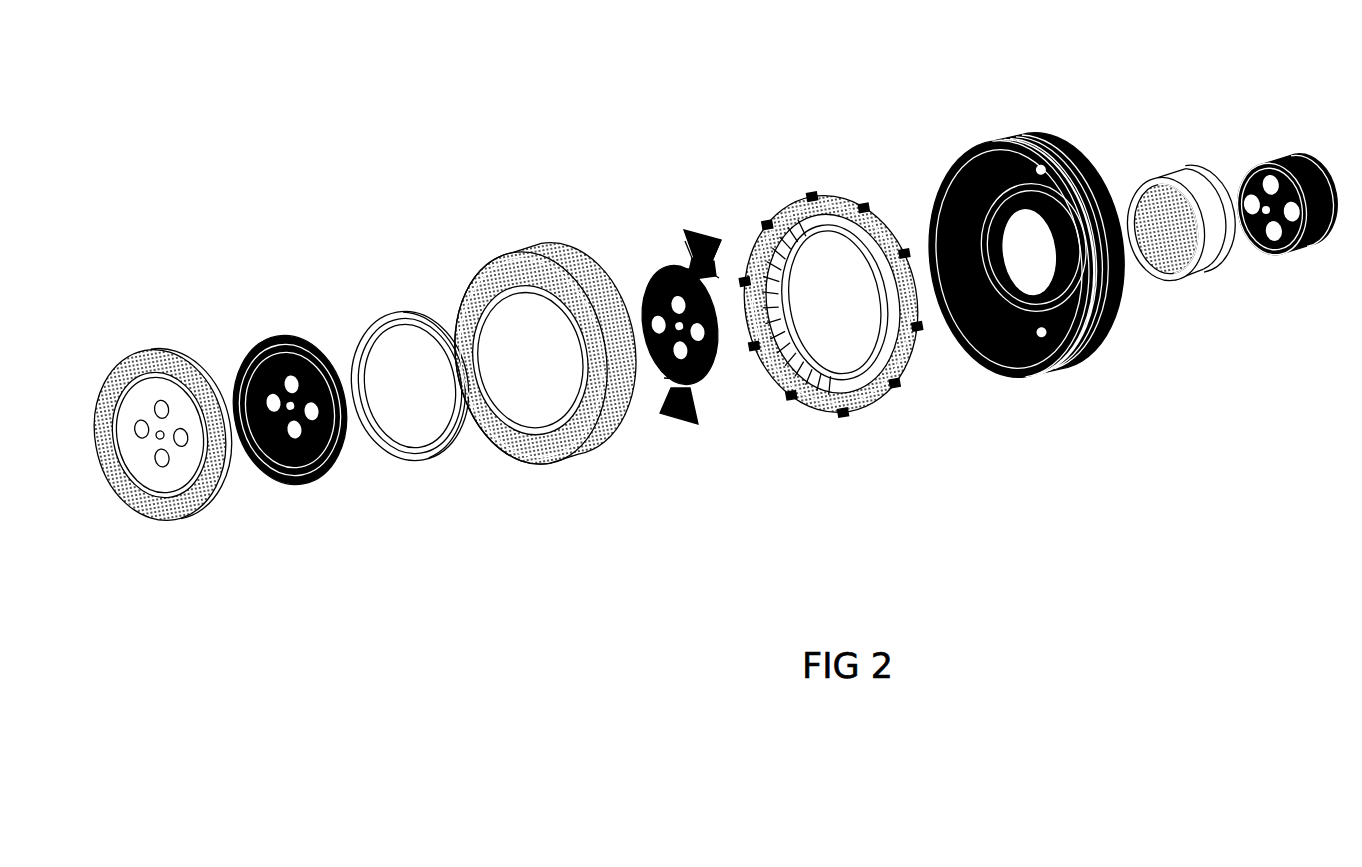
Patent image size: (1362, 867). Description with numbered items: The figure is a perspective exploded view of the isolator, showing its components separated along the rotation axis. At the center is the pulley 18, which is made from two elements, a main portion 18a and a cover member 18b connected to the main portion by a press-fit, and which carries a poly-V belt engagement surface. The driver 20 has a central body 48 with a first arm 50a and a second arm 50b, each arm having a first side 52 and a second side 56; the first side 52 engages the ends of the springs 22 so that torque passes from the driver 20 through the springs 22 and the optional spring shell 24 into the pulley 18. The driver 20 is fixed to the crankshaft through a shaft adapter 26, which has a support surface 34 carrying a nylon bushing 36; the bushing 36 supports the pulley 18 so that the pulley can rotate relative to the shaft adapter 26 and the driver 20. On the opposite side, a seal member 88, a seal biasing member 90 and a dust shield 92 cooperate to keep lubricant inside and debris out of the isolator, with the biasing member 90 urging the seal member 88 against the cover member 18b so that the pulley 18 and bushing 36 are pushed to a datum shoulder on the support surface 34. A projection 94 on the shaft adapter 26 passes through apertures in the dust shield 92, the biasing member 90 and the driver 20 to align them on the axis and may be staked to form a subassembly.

The pulley 18 is at (1090, 575).
The main portion 18a is at (1077, 355).
The cover member 18b is at (580, 450).
The driver 20 is at (676, 282).
The springs 22 is at (763, 307).
The spring shell 24 is at (839, 284).
The shaft adapter 26 is at (1285, 210).
The support surface 34 is at (1283, 157).
The bushing 36 is at (1198, 267).
The central body 48 is at (650, 297).
The first arm 50a is at (688, 223).
The second arm 50b is at (670, 413).
The first side 52 is at (680, 235).
The second side 56 is at (710, 247).
The seal member 88 is at (403, 450).
The seal biasing member 90 is at (288, 467).
The dust shield 92 is at (162, 507).
The projection 94 is at (1258, 200).